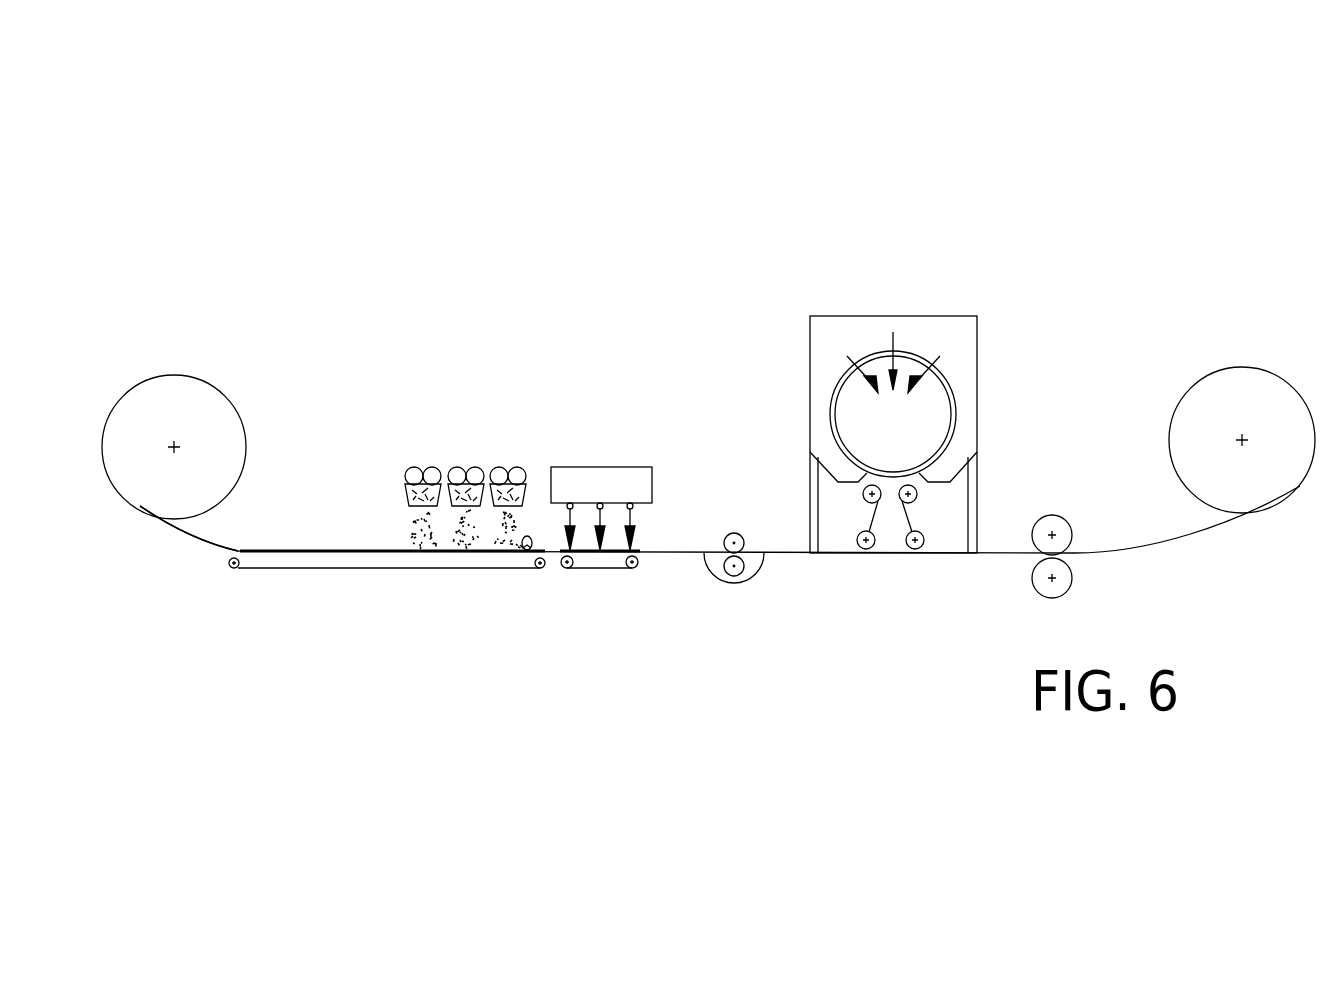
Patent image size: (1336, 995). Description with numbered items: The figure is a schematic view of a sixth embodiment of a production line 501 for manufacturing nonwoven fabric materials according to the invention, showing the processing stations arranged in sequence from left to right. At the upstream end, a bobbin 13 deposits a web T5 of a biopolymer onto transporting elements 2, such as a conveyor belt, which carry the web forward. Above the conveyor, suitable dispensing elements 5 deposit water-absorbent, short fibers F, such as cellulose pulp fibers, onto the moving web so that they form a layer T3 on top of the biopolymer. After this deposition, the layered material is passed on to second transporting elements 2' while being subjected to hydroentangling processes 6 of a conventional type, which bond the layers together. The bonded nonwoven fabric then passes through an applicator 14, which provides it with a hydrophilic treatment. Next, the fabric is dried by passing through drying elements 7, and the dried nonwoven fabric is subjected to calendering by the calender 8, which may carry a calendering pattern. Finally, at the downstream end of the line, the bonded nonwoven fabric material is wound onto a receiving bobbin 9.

The production line 501 is at (585, 152).
The bobbin 13 is at (152, 372).
The web of biopolymer T5 is at (228, 548).
The transporting elements 2 is at (387, 602).
The dispensing elements 5 is at (514, 452).
The water-absorbent short fibers F is at (521, 514).
The hydroentangling processes 6 is at (598, 452).
The layer of water-absorbent short fibers T3 is at (523, 560).
The second transporting elements 2' is at (600, 617).
The applicator 14 is at (732, 526).
The drying elements 7 is at (986, 356).
The calender 8 is at (1062, 507).
The receiving bobbin 9 is at (1265, 368).